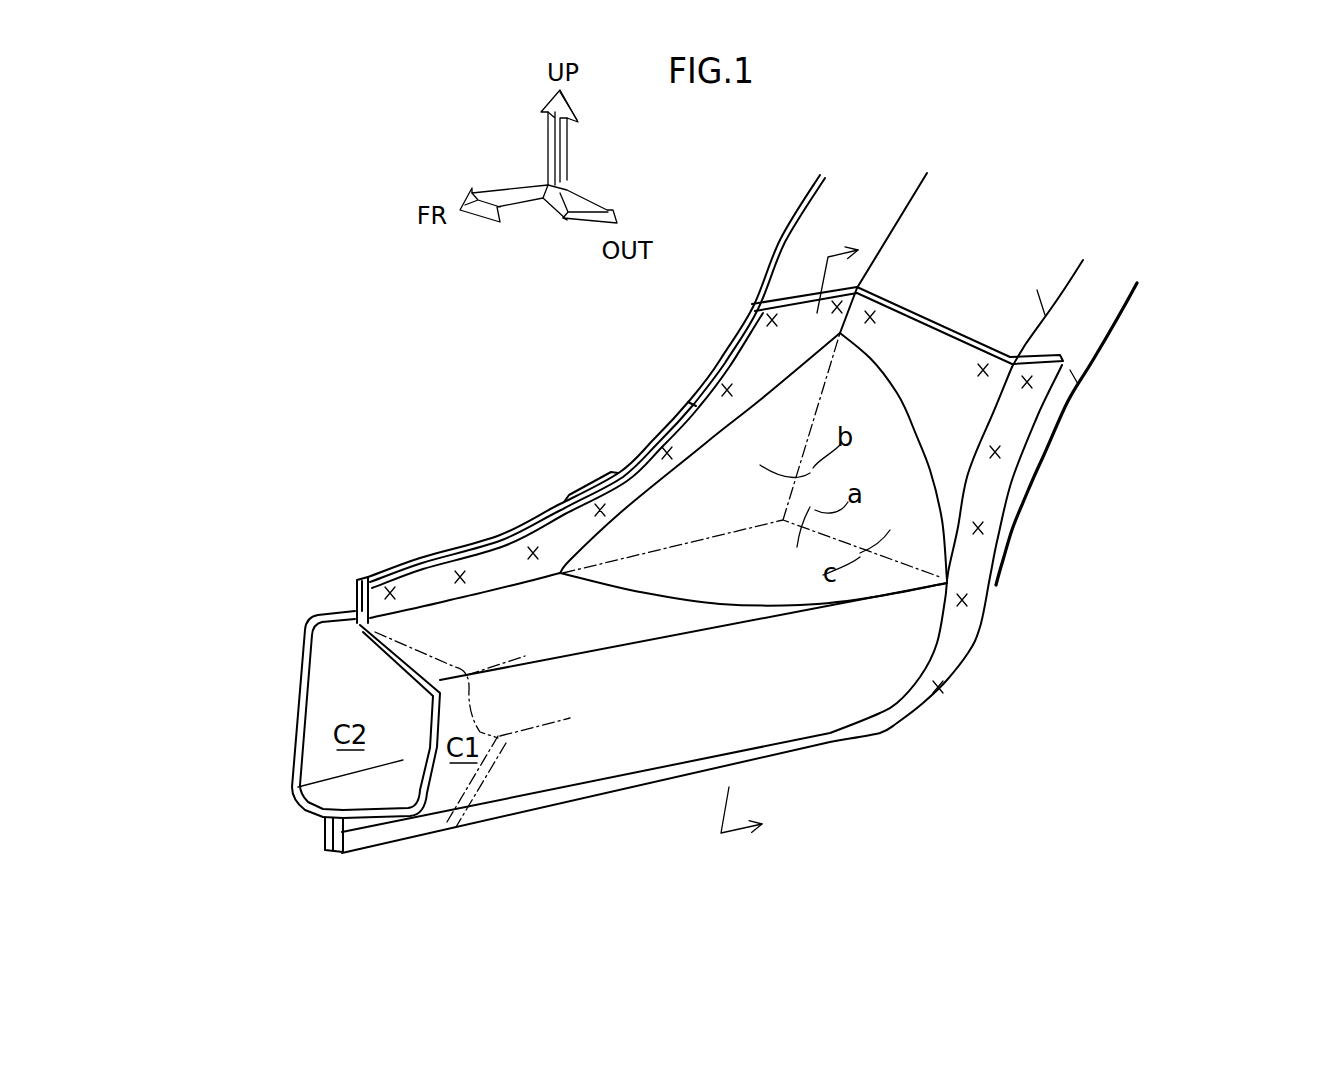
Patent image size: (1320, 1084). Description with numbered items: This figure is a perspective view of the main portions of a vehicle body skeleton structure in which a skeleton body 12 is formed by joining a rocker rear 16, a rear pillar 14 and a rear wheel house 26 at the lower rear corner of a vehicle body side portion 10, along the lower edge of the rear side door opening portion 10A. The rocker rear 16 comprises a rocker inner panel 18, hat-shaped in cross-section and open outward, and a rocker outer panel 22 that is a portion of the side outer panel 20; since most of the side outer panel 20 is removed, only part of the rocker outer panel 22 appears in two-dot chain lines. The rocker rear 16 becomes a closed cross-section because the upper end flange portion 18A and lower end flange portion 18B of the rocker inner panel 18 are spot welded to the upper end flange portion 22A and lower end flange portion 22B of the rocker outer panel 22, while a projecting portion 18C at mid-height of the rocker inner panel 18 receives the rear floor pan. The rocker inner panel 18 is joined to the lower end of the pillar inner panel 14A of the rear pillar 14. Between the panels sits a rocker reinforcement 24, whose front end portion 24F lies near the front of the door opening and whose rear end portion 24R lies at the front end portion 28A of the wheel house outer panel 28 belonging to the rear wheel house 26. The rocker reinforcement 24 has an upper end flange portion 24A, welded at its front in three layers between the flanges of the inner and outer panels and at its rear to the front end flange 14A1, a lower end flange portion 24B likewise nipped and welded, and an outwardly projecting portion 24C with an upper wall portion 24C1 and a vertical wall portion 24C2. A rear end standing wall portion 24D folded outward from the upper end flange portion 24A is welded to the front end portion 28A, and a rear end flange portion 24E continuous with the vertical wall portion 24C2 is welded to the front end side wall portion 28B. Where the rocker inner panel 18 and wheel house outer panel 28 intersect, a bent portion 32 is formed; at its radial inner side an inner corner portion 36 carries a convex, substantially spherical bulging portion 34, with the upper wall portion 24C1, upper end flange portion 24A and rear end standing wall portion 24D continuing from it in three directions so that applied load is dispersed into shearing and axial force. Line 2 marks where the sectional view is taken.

The vehicle body side portion 10 is at (900, 800).
The rear side door opening portion 10A is at (462, 548).
The skeleton body 12 is at (540, 394).
The rear pillar 14 is at (957, 190).
The pillar inner panel 14A is at (798, 262).
The front end flange 14A1 is at (728, 334).
The rocker rear 16 is at (463, 843).
The rocker inner panel 18 is at (289, 632).
The upper end flange portion 18A is at (353, 591).
The lower end flange portion 18B is at (320, 823).
The projecting portion 18C is at (293, 722).
The side outer panel 20 is at (528, 855).
The rocker outer panel 22 is at (522, 768).
The upper end flange portion 22A is at (398, 566).
The lower end flange portion 22B is at (358, 845).
The rocker reinforcement 24 is at (607, 720).
The upper end flange portion 24A is at (490, 568).
The lower end flange portion 24B is at (580, 794).
The projecting portion 24C is at (668, 738).
The upper wall portion 24C1 is at (607, 617).
The vertical wall portion 24C2 is at (810, 677).
The rear end standing wall portion 24D is at (928, 342).
The rear end flange portion 24E is at (993, 477).
The front end portion 24F is at (460, 716).
The rear end portion 24R is at (990, 513).
The rear wheel house 26 is at (1078, 411).
The wheel house outer panel 28 is at (1104, 297).
The front end portion 28A is at (1043, 313).
The front end side wall portion 28B is at (1078, 384).
The bent portion 32 is at (1044, 655).
The bulging portion 34 is at (686, 401).
The inner corner portion 36 is at (652, 452).
The line 2- 2 is at (830, 257).